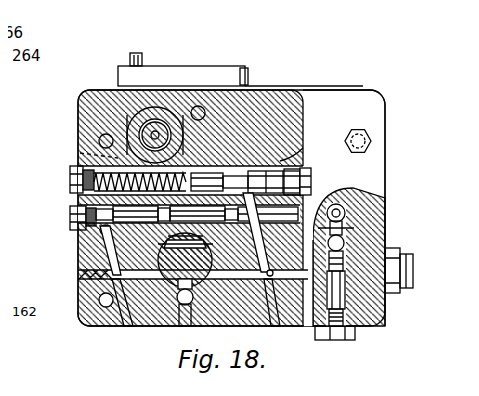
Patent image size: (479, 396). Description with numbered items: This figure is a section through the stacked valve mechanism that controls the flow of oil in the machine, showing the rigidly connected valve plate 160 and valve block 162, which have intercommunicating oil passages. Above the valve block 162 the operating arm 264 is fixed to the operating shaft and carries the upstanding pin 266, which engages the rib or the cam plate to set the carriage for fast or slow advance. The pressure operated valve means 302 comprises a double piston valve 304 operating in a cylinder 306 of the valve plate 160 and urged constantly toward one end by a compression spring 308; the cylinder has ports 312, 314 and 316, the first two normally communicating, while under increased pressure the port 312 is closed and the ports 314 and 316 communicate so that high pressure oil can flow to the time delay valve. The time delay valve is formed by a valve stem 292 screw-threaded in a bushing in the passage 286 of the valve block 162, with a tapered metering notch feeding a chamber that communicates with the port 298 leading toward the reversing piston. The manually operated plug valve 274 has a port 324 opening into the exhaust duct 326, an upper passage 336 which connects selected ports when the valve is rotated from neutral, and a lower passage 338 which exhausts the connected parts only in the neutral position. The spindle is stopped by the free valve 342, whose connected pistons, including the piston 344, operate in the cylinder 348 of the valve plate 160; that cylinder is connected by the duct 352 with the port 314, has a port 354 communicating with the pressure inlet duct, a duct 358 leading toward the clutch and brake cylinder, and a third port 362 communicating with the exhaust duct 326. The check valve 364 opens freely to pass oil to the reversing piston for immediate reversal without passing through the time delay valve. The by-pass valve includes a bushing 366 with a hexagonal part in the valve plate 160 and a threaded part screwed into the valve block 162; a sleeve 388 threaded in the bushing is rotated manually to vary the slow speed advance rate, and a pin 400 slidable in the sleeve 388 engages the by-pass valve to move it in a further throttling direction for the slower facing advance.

The valve plate 160 is at (72, 112).
The valve block 162 is at (348, 92).
The operating arm 264 is at (193, 67).
The upstanding pin 266 is at (135, 45).
The manually operated plug valve 274 is at (236, 306).
The passage 286 is at (337, 182).
The valve stem 292 is at (352, 182).
The port 298 is at (348, 212).
The pressure operated valve means 302 is at (230, 150).
The double piston valve 304 is at (255, 175).
The cylinder 306 is at (195, 162).
The compression spring 308 is at (63, 186).
The port 312 is at (296, 152).
The port 314 is at (303, 178).
The port 316 is at (210, 160).
The port 324 is at (157, 306).
The exhaust duct 326 is at (177, 307).
The upper passage 336 is at (168, 268).
The lower passage 338 is at (181, 262).
The valve 342 is at (258, 318).
The piston 344 is at (62, 219).
The cylinder 348 is at (62, 207).
The duct 352 is at (72, 145).
The port 354 is at (100, 265).
The duct 358 is at (178, 223).
The third port 362 is at (170, 219).
The check valve 364 is at (337, 230).
The bushing 366 is at (118, 93).
The sleeve 388 is at (137, 93).
The pin 400 is at (146, 118).